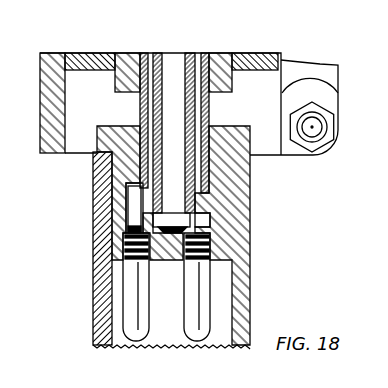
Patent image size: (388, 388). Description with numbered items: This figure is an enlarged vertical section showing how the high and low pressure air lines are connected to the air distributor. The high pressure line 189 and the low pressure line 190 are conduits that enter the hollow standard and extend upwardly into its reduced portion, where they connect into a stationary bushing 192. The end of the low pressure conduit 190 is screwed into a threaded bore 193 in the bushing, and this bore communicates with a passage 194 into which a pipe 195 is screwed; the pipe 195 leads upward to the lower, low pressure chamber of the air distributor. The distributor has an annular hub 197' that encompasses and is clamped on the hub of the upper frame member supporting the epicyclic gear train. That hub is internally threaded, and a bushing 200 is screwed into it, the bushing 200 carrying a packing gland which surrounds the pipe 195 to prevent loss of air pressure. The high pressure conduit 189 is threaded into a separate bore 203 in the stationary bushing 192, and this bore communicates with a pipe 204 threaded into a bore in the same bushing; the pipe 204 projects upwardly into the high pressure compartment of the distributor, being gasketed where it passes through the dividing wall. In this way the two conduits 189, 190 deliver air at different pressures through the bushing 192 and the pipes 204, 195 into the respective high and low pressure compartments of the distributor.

The high pressure line 189 is at (211, 319).
The low pressure line 190 is at (122, 305).
The stationary bushing 192 is at (250, 202).
The threaded bore 193 is at (133, 216).
The passage 194 is at (97, 179).
The pipe 195 is at (140, 110).
The annular hub 197' is at (330, 107).
The bushing 200 is at (218, 53).
The bore 203 is at (222, 226).
The pipe 204 is at (195, 109).